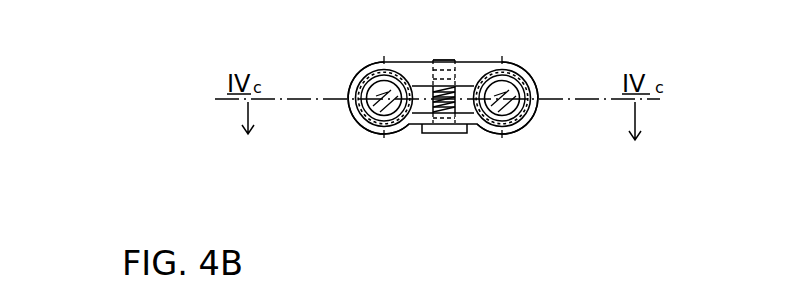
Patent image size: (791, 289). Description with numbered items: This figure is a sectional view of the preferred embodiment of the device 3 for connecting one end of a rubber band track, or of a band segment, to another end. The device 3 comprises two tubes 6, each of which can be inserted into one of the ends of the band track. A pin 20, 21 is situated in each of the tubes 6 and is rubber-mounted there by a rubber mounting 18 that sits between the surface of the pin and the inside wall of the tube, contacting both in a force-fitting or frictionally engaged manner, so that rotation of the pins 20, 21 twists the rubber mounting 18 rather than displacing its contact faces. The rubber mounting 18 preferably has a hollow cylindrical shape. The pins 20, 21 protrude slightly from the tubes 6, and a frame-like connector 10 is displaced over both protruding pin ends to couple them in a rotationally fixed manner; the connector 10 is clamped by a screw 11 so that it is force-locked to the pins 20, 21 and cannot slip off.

The device 3 is at (541, 28).
The tube 6 is at (357, 78).
The connector 10 is at (470, 68).
The screw 11 is at (445, 131).
The rubber mounting 18 is at (358, 110).
The pin 20 is at (376, 129).
The pin 21 is at (510, 129).